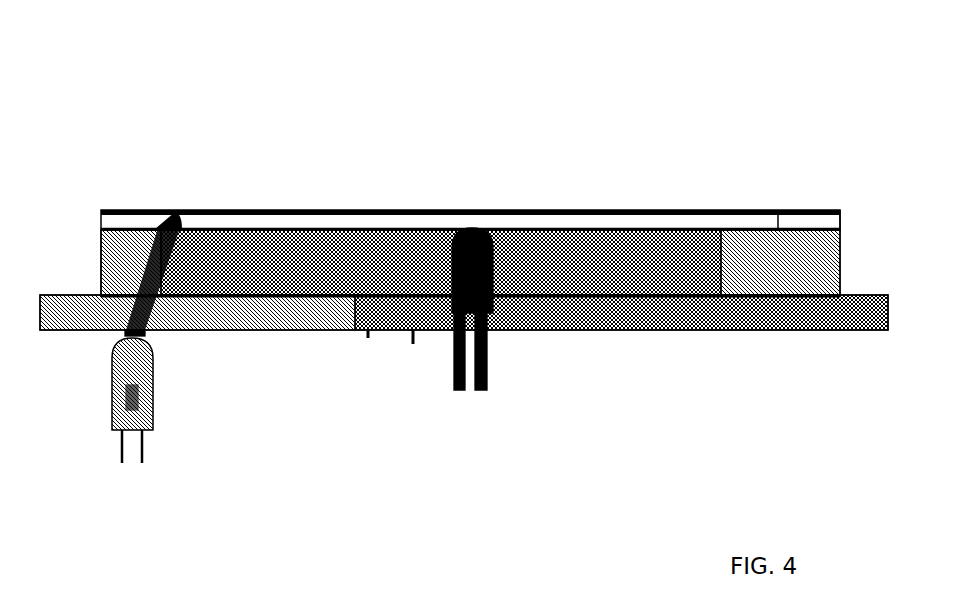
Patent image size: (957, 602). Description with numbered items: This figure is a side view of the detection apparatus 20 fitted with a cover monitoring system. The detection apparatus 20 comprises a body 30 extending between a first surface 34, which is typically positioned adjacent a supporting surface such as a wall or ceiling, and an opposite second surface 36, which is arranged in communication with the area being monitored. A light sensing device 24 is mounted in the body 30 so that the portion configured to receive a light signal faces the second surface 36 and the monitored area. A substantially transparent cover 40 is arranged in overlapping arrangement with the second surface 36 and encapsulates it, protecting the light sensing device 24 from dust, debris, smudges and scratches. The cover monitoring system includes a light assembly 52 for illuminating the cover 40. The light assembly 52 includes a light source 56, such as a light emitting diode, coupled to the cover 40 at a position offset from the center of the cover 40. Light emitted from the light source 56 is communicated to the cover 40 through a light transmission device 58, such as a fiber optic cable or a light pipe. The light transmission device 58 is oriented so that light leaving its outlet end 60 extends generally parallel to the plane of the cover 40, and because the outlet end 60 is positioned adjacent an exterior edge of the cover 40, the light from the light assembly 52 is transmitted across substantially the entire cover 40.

The detection apparatus 20 is at (106, 98).
The light sensing device 24 is at (473, 224).
The body 30 is at (672, 270).
The first surface 34 is at (750, 330).
The second surface 36 is at (778, 228).
The cover 40 is at (596, 222).
The light assembly 52 is at (167, 346).
The light source 56 is at (123, 382).
The light transmission device 58 is at (156, 220).
The outlet end 60 is at (180, 226).